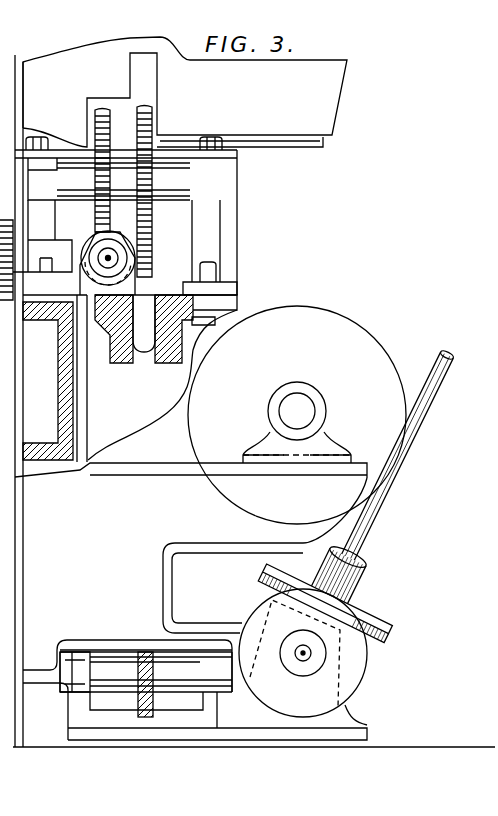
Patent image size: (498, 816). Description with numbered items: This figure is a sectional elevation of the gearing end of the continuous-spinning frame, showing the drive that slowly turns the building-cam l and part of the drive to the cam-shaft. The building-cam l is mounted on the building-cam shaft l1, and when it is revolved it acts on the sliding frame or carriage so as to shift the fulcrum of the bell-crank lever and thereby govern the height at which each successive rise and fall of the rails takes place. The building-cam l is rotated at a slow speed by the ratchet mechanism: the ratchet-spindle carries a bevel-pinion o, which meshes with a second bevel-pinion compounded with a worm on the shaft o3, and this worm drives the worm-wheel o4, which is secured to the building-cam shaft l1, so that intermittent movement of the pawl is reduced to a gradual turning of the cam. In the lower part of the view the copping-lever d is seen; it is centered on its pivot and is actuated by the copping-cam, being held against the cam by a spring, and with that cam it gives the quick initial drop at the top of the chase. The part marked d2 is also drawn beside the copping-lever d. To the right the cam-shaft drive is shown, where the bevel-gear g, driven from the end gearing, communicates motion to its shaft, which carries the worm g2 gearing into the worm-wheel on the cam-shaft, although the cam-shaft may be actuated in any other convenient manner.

The worm-wheel o4 is at (87, 123).
The building-cam l is at (151, 136).
The building-cam shaft l1 is at (240, 167).
The bevel-pinion o is at (94, 222).
The shaft o3 is at (118, 260).
The copping-lever d is at (123, 665).
The sleeve d2 is at (80, 664).
The bevel-gear g is at (264, 596).
The worm g2 is at (294, 656).